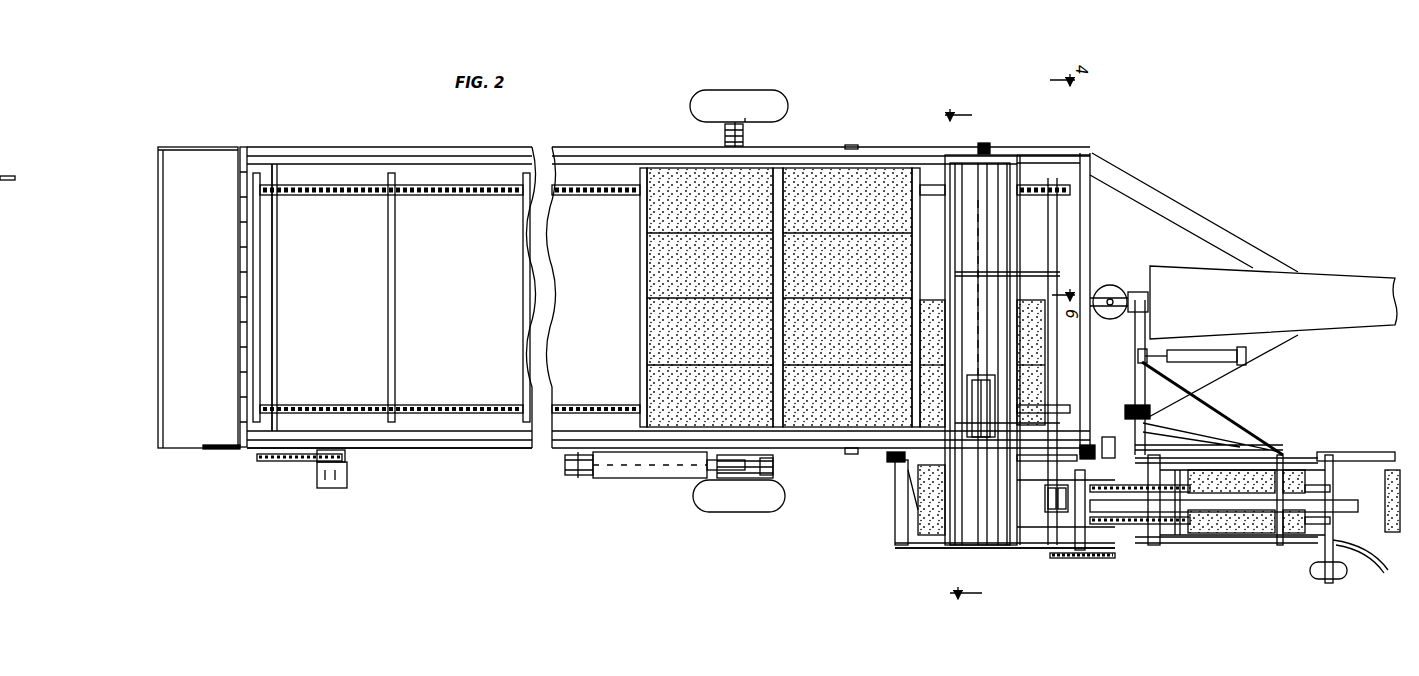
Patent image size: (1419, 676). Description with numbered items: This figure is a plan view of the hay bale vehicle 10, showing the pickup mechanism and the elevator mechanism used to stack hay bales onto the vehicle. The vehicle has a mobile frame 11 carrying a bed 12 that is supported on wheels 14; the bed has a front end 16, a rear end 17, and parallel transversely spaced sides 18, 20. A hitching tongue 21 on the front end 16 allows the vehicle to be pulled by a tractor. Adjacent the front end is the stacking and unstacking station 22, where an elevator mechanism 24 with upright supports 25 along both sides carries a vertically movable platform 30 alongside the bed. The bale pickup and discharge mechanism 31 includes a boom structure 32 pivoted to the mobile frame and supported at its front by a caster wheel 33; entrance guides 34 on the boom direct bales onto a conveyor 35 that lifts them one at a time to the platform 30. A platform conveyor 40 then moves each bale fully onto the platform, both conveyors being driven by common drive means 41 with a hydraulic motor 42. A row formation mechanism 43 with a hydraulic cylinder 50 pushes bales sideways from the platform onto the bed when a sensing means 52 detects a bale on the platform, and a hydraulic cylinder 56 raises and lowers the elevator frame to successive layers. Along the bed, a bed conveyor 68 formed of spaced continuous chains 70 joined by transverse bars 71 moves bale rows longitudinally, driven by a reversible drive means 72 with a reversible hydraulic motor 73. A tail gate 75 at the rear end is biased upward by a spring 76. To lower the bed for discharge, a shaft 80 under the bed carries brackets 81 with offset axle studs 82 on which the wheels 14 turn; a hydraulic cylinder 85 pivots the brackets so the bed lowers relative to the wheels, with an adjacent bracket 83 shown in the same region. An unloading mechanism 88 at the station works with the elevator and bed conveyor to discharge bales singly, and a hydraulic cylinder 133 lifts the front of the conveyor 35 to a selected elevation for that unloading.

The hay bale vehicle 10 is at (1157, 178).
The mobile frame 11 is at (900, 148).
The bed 12 is at (470, 306).
The wheels 14 is at (775, 105).
The front end 16 is at (1040, 165).
The rear end 17 is at (285, 310).
The side 18 is at (500, 432).
The side 20 is at (500, 178).
The hitching tongue 21 is at (1268, 262).
The stacking and unstacking station 22 is at (1025, 165).
The elevator mechanism 24 is at (940, 548).
The upright supports 25 is at (984, 143).
The platform 30 is at (1040, 530).
The bale pickup and discharge mechanism 31 is at (1220, 543).
The boom structure 32 is at (1260, 543).
The caster wheel 33 is at (1335, 580).
The entrance guides 34 is at (1365, 458).
The conveyor 35 is at (1135, 530).
The platform conveyor 40 is at (1058, 512).
The common drive means 41 is at (1085, 558).
The hydraulic motor 42 is at (1108, 437).
The row formation mechanism 43 is at (905, 545).
The hydraulic cylinder 50 is at (990, 402).
The sensing means 52 is at (905, 505).
The hydraulic cylinder 56 is at (1062, 456).
The bed conveyor 68 is at (497, 196).
The continuous chains 70 is at (441, 196).
The transverse bars 71 is at (395, 300).
The reversible drive means 72 is at (305, 460).
The reversible hydraulic motor 73 is at (347, 480).
The tail gate 75 is at (160, 430).
The spring 76 is at (240, 450).
The shaft 80 is at (725, 133).
The brackets 81 is at (743, 133).
The axle studs 82 is at (745, 118).
The bracket 83 is at (773, 475).
The hydraulic cylinder 85 is at (640, 478).
The unloading mechanism 88 is at (1017, 239).
The hydraulic cylinder 133 is at (1215, 362).